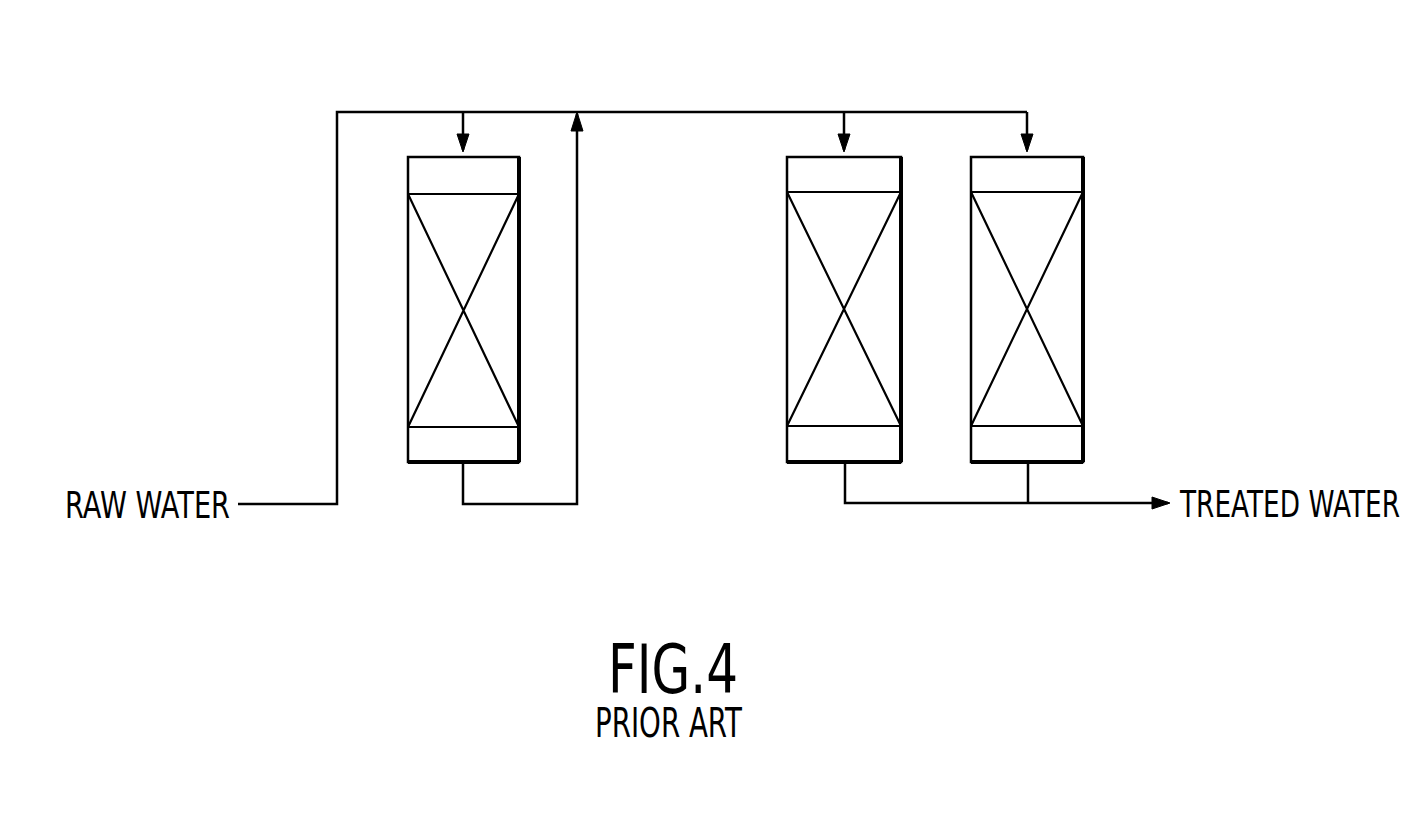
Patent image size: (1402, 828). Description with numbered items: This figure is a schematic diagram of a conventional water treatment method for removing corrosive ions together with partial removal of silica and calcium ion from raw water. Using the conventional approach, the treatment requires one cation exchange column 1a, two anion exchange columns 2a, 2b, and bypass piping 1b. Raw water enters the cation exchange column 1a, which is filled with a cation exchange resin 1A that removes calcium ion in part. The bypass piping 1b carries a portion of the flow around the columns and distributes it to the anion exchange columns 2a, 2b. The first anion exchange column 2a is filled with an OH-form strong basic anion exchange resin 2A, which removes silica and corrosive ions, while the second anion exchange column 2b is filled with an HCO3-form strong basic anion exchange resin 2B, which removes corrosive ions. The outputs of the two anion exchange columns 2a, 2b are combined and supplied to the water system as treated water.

The cation exchange column 1a is at (433, 352).
The cation exchange resin 1A is at (427, 315).
The bypass piping 1b is at (568, 112).
The anion exchange column 2a is at (792, 309).
The OH-form strong basic anion exchange resin 2A is at (800, 242).
The anion exchange column 2b is at (1068, 309).
The HCO3-form strong basic anion exchange resin 2B is at (1058, 302).